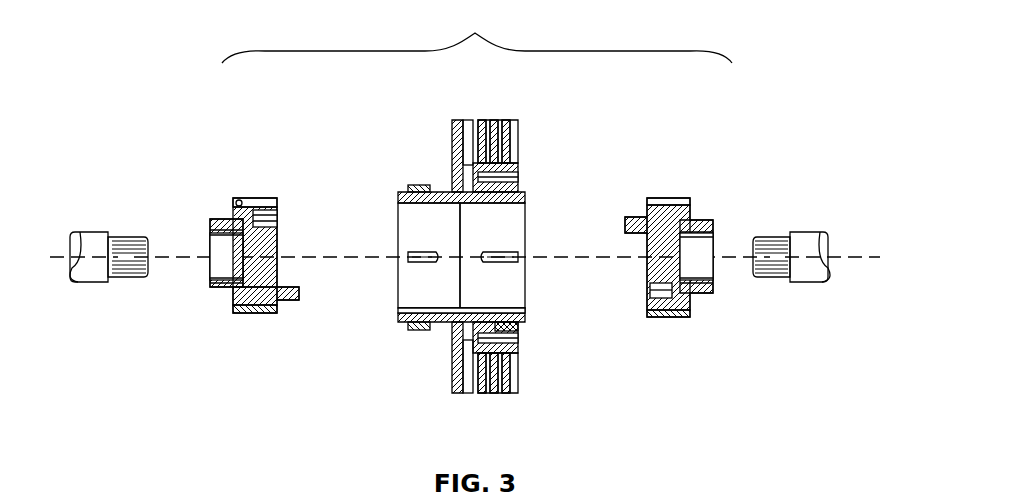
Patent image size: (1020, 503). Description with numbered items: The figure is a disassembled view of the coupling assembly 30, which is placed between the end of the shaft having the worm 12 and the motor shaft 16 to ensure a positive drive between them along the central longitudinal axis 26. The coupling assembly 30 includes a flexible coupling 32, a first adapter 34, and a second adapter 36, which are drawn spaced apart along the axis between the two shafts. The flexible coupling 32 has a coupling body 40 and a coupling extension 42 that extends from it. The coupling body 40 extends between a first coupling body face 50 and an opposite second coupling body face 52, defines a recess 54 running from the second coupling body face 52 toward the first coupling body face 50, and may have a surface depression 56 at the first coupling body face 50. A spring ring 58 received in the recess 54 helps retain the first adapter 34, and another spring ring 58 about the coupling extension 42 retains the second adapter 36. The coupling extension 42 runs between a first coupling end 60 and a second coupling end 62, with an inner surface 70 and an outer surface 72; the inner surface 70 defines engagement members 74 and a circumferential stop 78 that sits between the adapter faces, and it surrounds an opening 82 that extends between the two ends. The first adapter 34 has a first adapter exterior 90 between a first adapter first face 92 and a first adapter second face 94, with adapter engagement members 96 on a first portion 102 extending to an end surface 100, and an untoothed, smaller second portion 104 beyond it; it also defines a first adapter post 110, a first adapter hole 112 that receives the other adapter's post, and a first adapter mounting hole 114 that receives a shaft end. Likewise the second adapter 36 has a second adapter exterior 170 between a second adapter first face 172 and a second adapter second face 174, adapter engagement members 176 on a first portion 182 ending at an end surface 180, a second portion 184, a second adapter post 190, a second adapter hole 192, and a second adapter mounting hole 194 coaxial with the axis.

The coupling assembly 30 is at (477, 34).
The worm 12 is at (88, 226).
The motor shaft 16 is at (807, 222).
The central longitudinal axis 26 is at (845, 258).
The second adapter 36 is at (239, 239).
The first adapter 34 is at (666, 237).
The flexible coupling 32 is at (475, 259).
The coupling body 40 is at (491, 259).
The coupling extension 42 is at (468, 257).
The first coupling body face 50 is at (491, 127).
The second coupling body face 52 is at (518, 147).
The recess 54 is at (486, 176).
The surface depression 56 is at (452, 143).
The spring ring 58 is at (416, 332).
The first coupling end 60 is at (400, 193).
The second coupling end 62 is at (526, 195).
The inner surface 70 is at (398, 206).
The outer surface 72 is at (416, 185).
The engagement members 74 is at (420, 200).
The stop 78 is at (524, 207).
The opening 82 is at (528, 220).
The first adapter exterior 90 is at (692, 198).
The first adapter first face 92 is at (648, 205).
The first adapter second face 94 is at (715, 238).
The adapter engagement members 96 is at (657, 194).
The end surface 100 is at (713, 221).
The first portion 102 is at (678, 305).
The second portion 104 is at (694, 300).
The first adapter post 110 is at (625, 220).
The first adapter hole 112 is at (655, 292).
The first adapter mounting hole 114 is at (714, 245).
The second adapter exterior 170 is at (238, 205).
The second adapter first face 172 is at (273, 204).
The second adapter second face 174 is at (210, 225).
The adapter engagement members 176 is at (259, 184).
The end surface 180 is at (232, 212).
The first portion 182 is at (255, 314).
The second portion 184 is at (220, 290).
The second adapter post 190 is at (286, 304).
The second adapter hole 192 is at (279, 219).
The second adapter mounting hole 194 is at (206, 265).